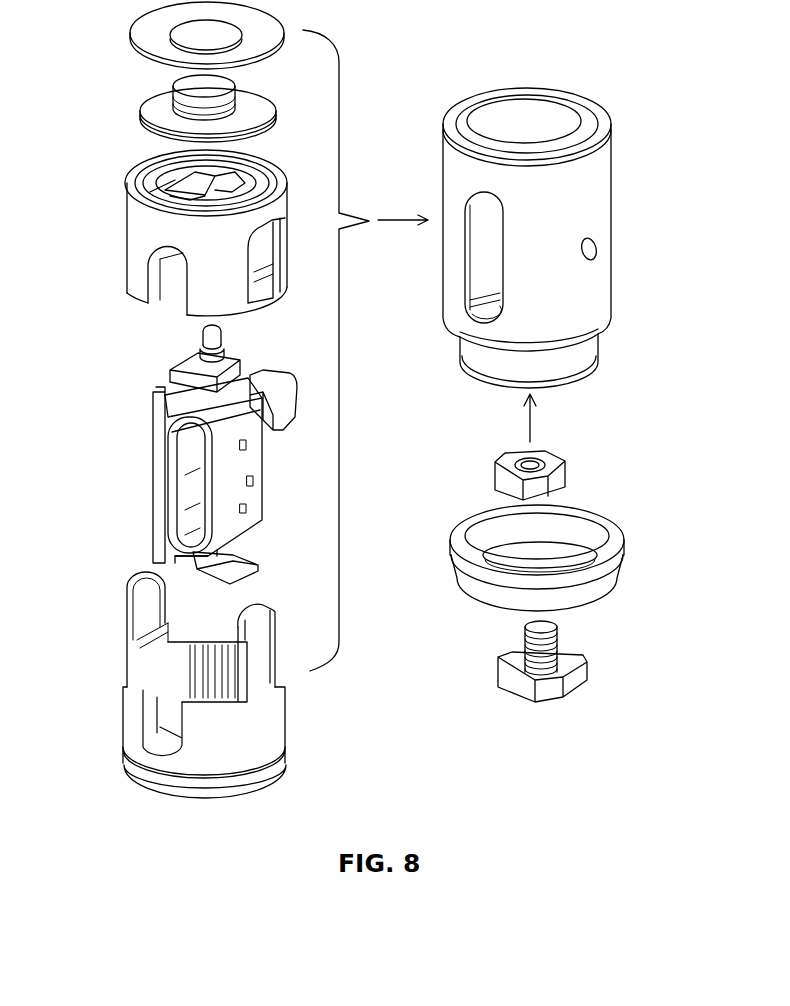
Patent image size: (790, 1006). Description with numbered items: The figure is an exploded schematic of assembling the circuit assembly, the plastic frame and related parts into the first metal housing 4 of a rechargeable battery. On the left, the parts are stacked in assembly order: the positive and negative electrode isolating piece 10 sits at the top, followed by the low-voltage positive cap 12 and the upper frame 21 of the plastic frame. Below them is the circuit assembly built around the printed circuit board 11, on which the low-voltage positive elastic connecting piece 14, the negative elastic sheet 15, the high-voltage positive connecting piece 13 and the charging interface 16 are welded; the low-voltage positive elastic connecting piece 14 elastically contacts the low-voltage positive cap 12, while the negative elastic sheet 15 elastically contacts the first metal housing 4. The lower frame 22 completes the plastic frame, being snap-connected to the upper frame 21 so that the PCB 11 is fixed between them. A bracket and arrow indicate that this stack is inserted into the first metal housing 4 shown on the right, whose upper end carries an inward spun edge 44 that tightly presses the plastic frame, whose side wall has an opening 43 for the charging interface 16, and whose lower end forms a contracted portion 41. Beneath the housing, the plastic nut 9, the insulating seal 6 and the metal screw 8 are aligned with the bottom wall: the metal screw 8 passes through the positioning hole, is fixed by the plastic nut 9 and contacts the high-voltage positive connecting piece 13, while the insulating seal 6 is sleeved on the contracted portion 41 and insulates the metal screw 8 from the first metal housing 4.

The positive and negative electrode isolating piece 10 is at (150, 33).
The low-voltage positive cap 12 is at (160, 115).
The upper frame 21 is at (150, 233).
The low-voltage positive elastic connecting piece 14 is at (213, 362).
The negative elastic sheet 15 is at (275, 390).
The charging interface 16 is at (192, 467).
The printed circuit board 11 is at (176, 454).
The high-voltage positive connecting piece 13 is at (227, 570).
The lower frame 22 is at (173, 680).
The spun edge 44 is at (602, 135).
The first metal housing 4 is at (567, 238).
The opening 43 is at (485, 257).
The contracted portion 41 is at (572, 365).
The plastic nut 9 is at (547, 485).
The insulating seal 6 is at (607, 573).
The metal screw 8 is at (585, 660).